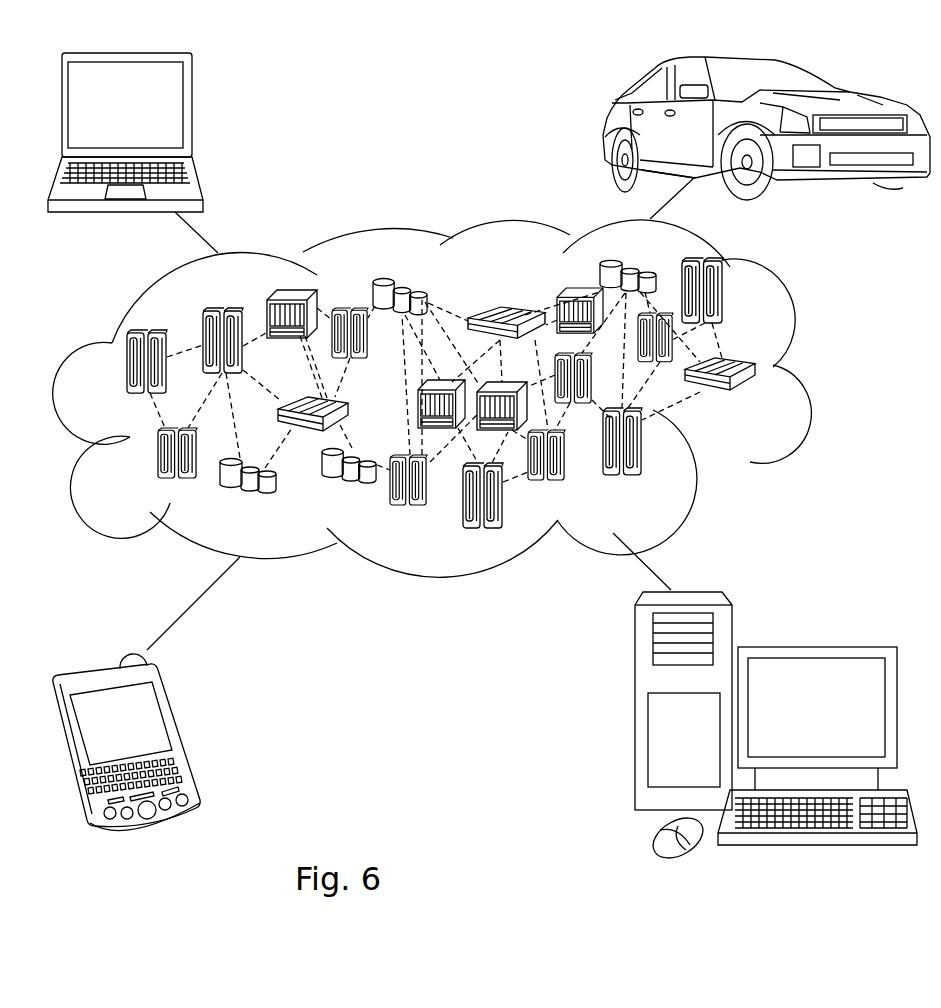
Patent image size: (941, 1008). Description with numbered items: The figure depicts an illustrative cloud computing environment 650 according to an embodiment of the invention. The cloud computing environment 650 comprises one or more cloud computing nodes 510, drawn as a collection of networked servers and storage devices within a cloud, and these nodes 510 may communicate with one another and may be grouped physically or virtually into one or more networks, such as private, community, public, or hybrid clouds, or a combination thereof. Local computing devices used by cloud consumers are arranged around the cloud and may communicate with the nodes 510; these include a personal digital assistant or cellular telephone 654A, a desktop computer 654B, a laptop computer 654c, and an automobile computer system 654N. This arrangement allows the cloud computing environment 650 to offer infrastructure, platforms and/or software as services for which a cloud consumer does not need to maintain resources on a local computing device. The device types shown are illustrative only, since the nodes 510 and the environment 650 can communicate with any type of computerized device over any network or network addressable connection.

The cloud computing nodes 510 is at (759, 400).
The cloud computing environment 650 is at (815, 373).
The personal digital assistant or cellular telephone 654A is at (184, 738).
The desktop computer 654B is at (813, 645).
The laptop computer 654c is at (192, 112).
The automobile computer system 654N is at (607, 128).